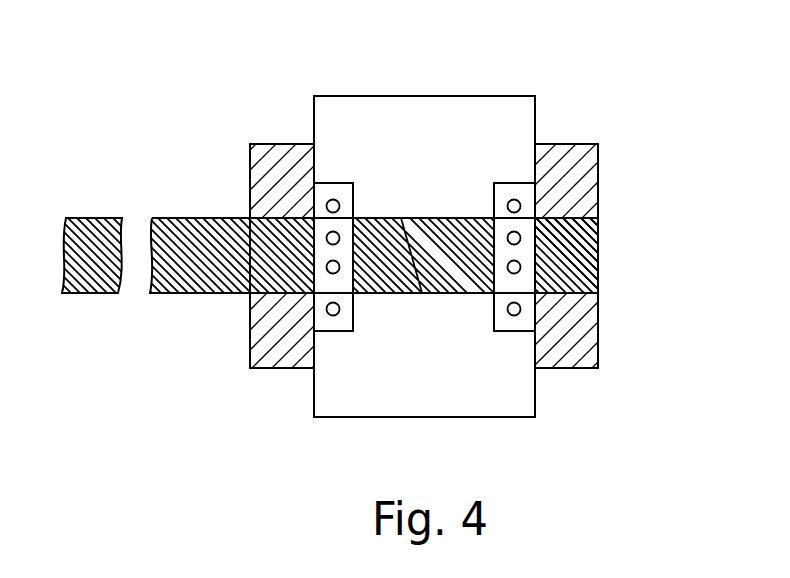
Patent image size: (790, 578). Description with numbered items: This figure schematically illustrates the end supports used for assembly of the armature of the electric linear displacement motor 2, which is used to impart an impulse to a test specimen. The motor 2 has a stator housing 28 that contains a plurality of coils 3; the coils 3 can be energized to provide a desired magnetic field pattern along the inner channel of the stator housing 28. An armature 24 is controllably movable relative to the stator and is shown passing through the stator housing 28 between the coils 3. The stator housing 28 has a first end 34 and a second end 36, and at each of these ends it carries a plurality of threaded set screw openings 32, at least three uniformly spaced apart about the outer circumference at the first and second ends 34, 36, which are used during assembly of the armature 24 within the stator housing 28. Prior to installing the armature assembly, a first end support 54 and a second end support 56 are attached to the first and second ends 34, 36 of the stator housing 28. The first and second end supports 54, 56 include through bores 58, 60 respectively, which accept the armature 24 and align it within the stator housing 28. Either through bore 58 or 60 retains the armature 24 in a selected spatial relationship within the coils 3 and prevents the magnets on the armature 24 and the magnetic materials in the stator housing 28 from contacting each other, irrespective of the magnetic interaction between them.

The electric linear displacement motor 2 is at (424, 216).
The coils 3 is at (478, 129).
The armature 24 is at (588, 267).
The stator housing 28 is at (380, 135).
The threaded set screw openings 32 is at (340, 309).
The first end 34 is at (537, 392).
The second end 36 is at (314, 400).
The first end support 54 is at (565, 165).
The second end support 56 is at (288, 160).
The through bore 58 is at (579, 219).
The through bore 60 is at (250, 293).